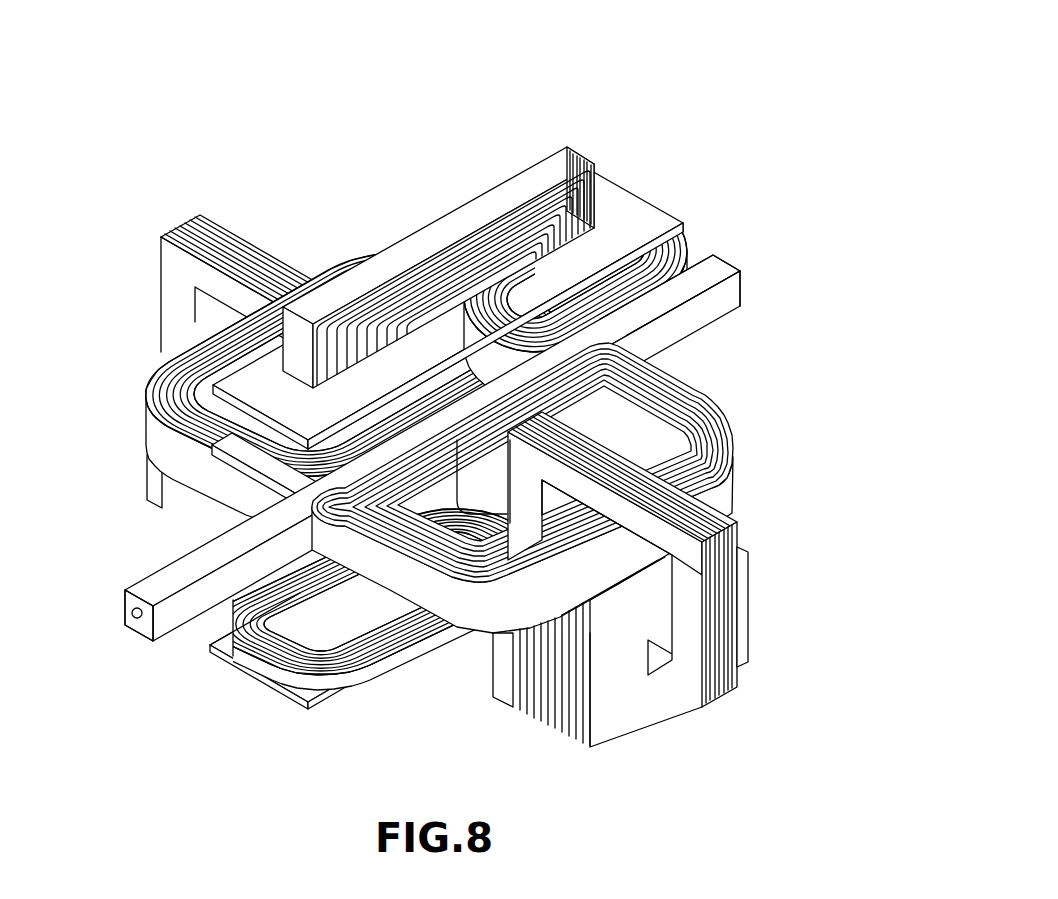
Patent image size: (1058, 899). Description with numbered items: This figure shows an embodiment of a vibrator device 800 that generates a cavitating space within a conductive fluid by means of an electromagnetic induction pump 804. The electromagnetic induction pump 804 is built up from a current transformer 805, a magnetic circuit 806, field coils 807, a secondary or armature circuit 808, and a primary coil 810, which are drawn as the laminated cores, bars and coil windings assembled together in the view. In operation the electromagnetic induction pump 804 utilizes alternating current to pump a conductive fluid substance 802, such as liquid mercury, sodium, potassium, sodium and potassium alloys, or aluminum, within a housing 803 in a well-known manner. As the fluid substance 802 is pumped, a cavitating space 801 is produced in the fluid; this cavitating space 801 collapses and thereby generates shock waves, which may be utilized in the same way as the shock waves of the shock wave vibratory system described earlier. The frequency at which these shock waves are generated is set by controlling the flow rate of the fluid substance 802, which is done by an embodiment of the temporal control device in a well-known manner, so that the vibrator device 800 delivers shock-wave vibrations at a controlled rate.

The vibrator device 800 is at (668, 67).
The cavitating space 801 is at (132, 612).
The fluid substance 802 is at (145, 628).
The housing 803 is at (720, 256).
The electromagnetic induction pump 804 is at (783, 605).
The current transformer 805 is at (184, 226).
The magnetic circuit 806 is at (560, 150).
The field coils 807 is at (622, 194).
The secondary or armature circuit 808 is at (726, 423).
The primary coil 810 is at (548, 700).